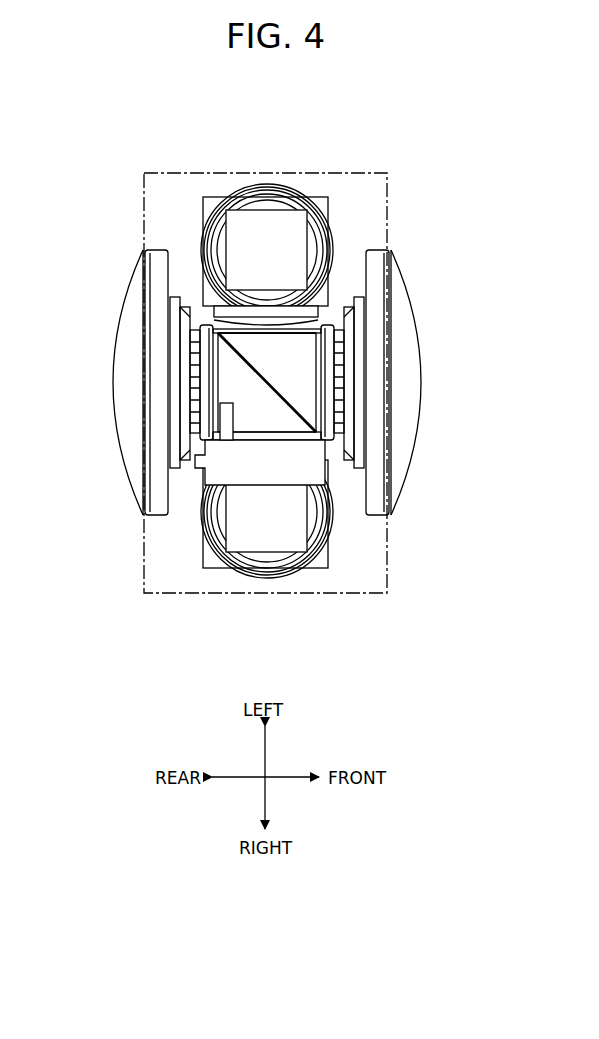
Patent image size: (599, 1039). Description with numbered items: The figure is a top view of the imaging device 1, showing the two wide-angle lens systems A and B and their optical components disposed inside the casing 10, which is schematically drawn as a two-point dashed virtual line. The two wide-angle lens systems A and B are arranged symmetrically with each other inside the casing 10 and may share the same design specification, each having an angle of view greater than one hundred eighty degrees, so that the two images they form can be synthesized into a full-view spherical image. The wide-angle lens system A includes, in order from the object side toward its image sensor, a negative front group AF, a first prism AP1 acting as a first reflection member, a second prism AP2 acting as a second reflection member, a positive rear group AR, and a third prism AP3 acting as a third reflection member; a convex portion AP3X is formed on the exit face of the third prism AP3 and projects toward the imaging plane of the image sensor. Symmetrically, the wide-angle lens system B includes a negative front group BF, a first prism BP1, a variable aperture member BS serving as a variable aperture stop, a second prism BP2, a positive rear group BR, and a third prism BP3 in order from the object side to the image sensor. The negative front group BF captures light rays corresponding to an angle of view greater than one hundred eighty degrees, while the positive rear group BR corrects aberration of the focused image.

The imaging device 1 is at (410, 121).
The casing 10 is at (190, 172).
The wide-angle lens system A is at (441, 230).
The wide-angle lens system B is at (115, 585).
The positive rear group AR is at (267, 198).
The negative front group AF is at (412, 367).
The first prism AP1 is at (305, 338).
The second prism AP2 is at (288, 223).
The third prism AP3 is at (323, 207).
The convex portion AP3X is at (268, 322).
The negative front group BF is at (118, 397).
The positive rear group BR is at (263, 565).
The variable aperture member BS is at (316, 462).
The first prism BP1 is at (242, 417).
The second prism BP2 is at (240, 542).
The third prism BP3 is at (207, 558).